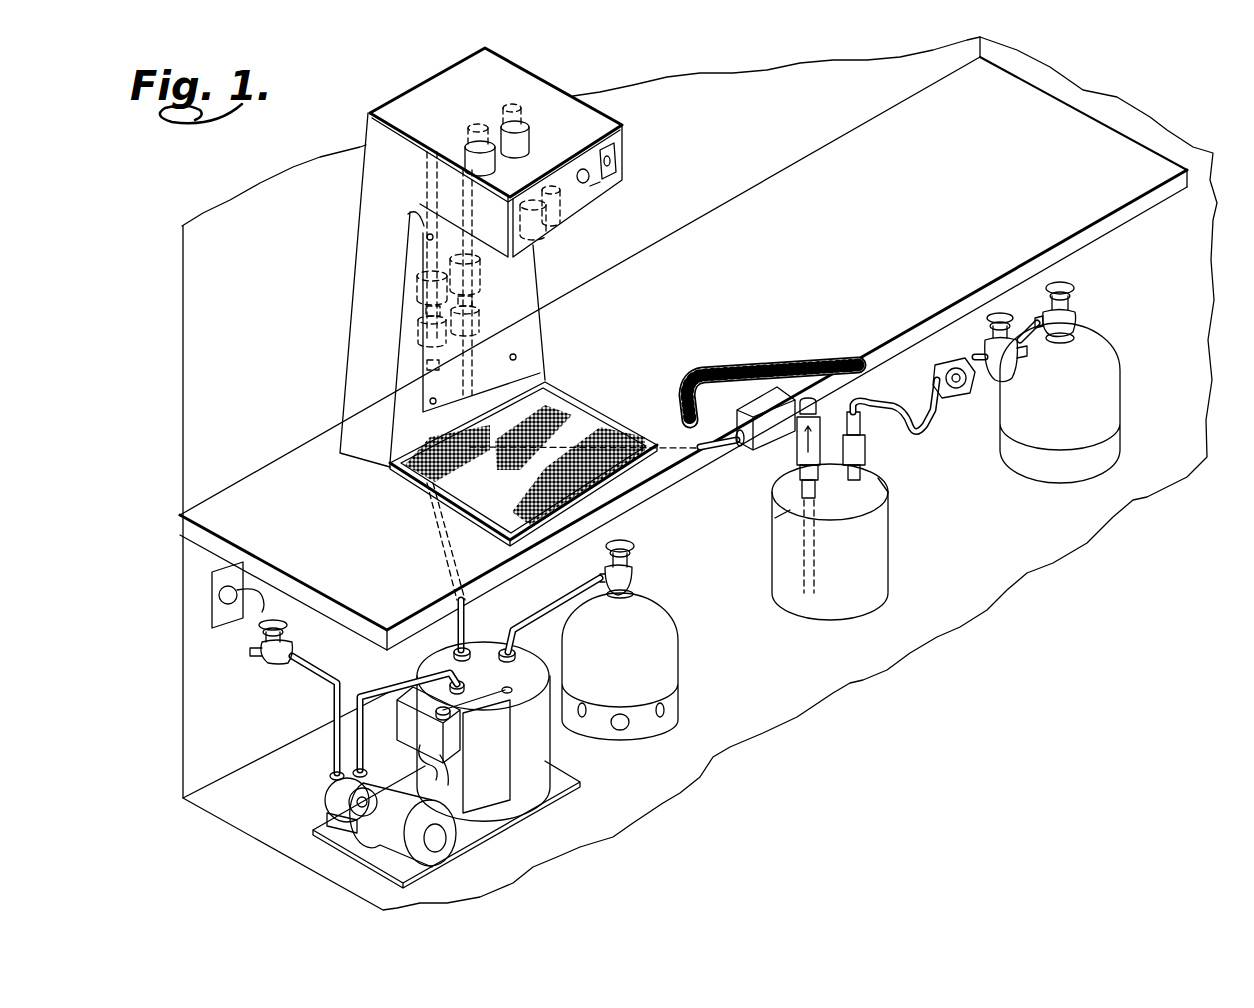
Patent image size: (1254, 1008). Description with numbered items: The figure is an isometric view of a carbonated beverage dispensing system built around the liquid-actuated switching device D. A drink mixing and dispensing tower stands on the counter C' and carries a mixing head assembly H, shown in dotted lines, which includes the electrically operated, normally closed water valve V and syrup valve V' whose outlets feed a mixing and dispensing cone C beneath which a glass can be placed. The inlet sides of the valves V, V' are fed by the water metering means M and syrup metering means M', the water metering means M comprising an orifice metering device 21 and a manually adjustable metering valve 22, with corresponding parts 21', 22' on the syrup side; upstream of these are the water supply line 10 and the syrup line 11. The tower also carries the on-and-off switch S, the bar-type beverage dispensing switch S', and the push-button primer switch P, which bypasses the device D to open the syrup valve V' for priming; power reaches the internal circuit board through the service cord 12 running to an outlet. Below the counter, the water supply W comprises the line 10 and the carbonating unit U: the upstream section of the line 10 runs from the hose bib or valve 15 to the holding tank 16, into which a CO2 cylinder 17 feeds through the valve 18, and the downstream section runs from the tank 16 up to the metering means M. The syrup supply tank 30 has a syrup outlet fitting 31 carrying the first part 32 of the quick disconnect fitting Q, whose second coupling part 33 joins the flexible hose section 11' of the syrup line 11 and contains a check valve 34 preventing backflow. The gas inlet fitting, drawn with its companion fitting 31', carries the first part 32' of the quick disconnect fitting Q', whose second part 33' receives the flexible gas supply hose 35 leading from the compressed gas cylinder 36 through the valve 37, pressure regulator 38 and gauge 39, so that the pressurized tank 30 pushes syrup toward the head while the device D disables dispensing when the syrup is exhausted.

The counter C' is at (683, 353).
The mixing head assembly H is at (432, 192).
The water valve V is at (449, 136).
The syrup valve V' is at (489, 118).
The push-button primer switch P is at (583, 168).
The on-and-off switch S is at (643, 151).
The beverage dispensing switch S' is at (635, 189).
The mixing and dispensing cone C is at (574, 215).
The water metering means M is at (375, 289).
The syrup metering means M' is at (523, 298).
The orifice metering device 21 is at (373, 345).
The pump 21' is at (530, 313).
The metering valve 22 is at (372, 322).
The coupling 22' is at (523, 278).
The water supply line 10 is at (430, 606).
The syrup line 11 is at (585, 425).
The flexible hose section 11' is at (776, 363).
The check valve 34 is at (770, 443).
The liquid-actuated switching device D is at (796, 388).
The service cord 12 is at (215, 630).
The hose bib or valve 15 is at (262, 668).
The holding tank 16 is at (537, 757).
The CO2 cylinder 17 is at (666, 650).
The valve 18 is at (636, 572).
The water supply W is at (328, 767).
The carbonating unit U is at (553, 800).
The syrup supply tank 30 is at (808, 610).
The syrup outlet fitting 31 is at (757, 539).
The tank fitting 31' is at (904, 497).
The gas inlet fitting 32 is at (775, 464).
The first part of quick disconnect fitting Q' 32' is at (893, 455).
The second coupling part 33 is at (824, 519).
The second part of quick disconnect fitting Q' 33' is at (865, 507).
The quick disconnect fitting Q is at (806, 406).
The quick disconnect fitting Q' is at (921, 455).
The gas supply hose 35 is at (930, 418).
The compressed gas cylinder 36 is at (1100, 388).
The valve 37 is at (1078, 320).
The pressure regulator 38 is at (1020, 316).
The gauge 39 is at (950, 357).